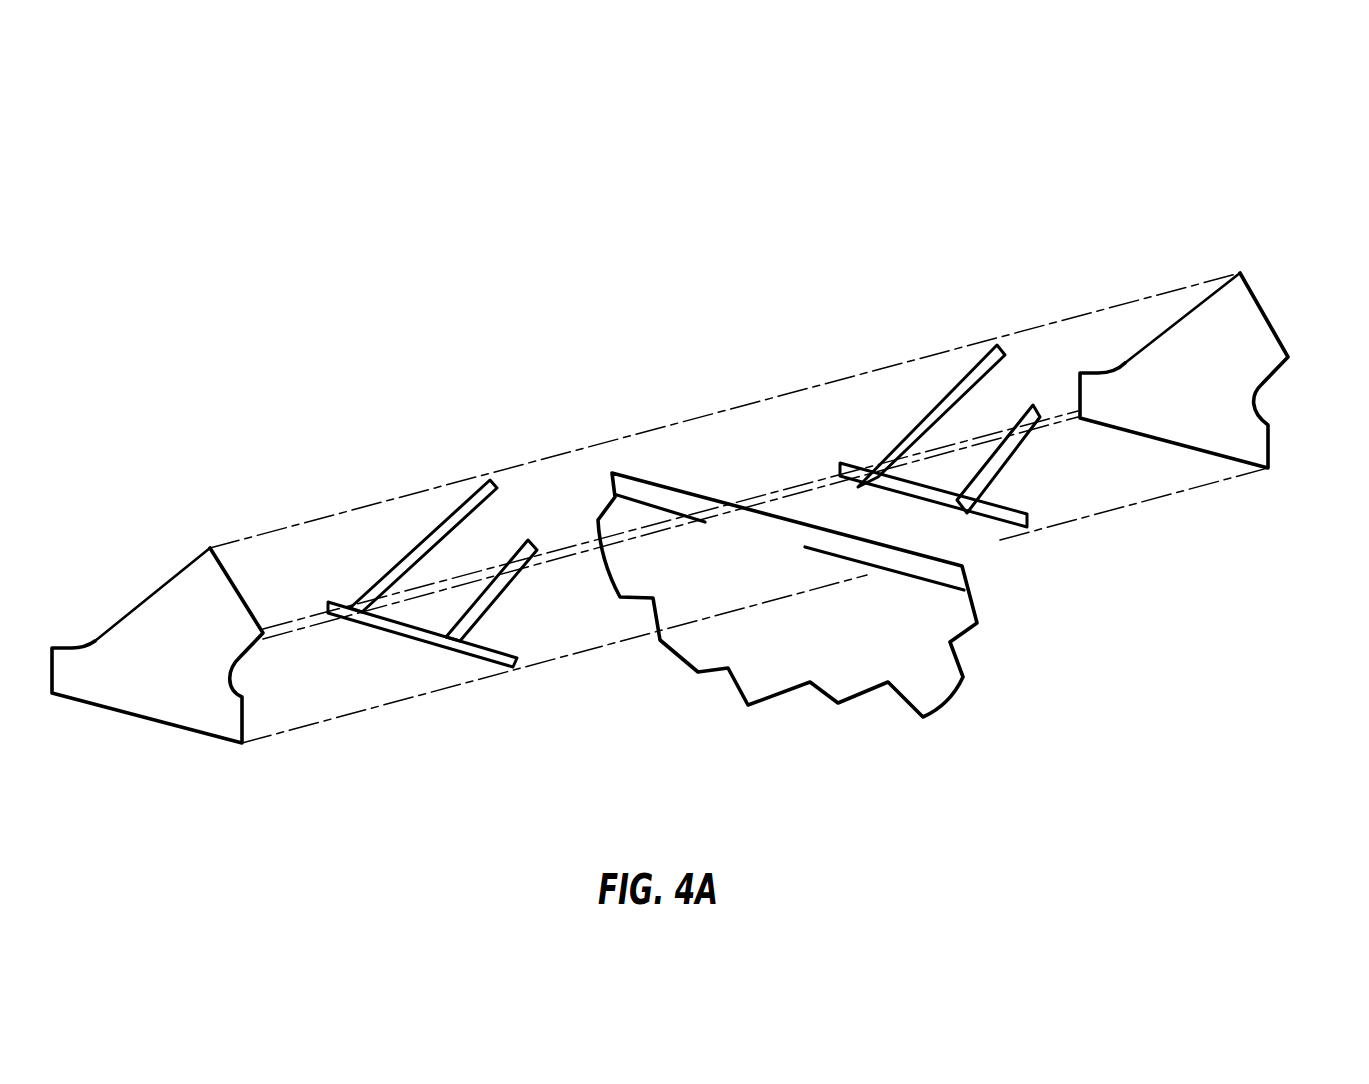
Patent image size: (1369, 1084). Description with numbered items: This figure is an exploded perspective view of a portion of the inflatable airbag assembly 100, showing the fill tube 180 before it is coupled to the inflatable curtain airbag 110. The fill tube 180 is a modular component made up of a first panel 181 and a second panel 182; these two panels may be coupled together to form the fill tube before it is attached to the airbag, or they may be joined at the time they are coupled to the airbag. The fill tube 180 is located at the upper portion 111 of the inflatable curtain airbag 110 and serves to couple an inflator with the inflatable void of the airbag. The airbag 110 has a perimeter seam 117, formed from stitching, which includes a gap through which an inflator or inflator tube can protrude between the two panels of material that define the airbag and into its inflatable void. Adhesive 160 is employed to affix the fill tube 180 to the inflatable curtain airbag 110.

The inflatable airbag assembly 100 is at (918, 163).
The inflatable curtain airbag 110 is at (987, 578).
The upper portion 111 is at (853, 663).
The perimeter seam 117 is at (933, 583).
The adhesive 160 is at (387, 627).
The fill tube 180 is at (126, 541).
The first panel 181 is at (1227, 305).
The second panel 182 is at (193, 580).